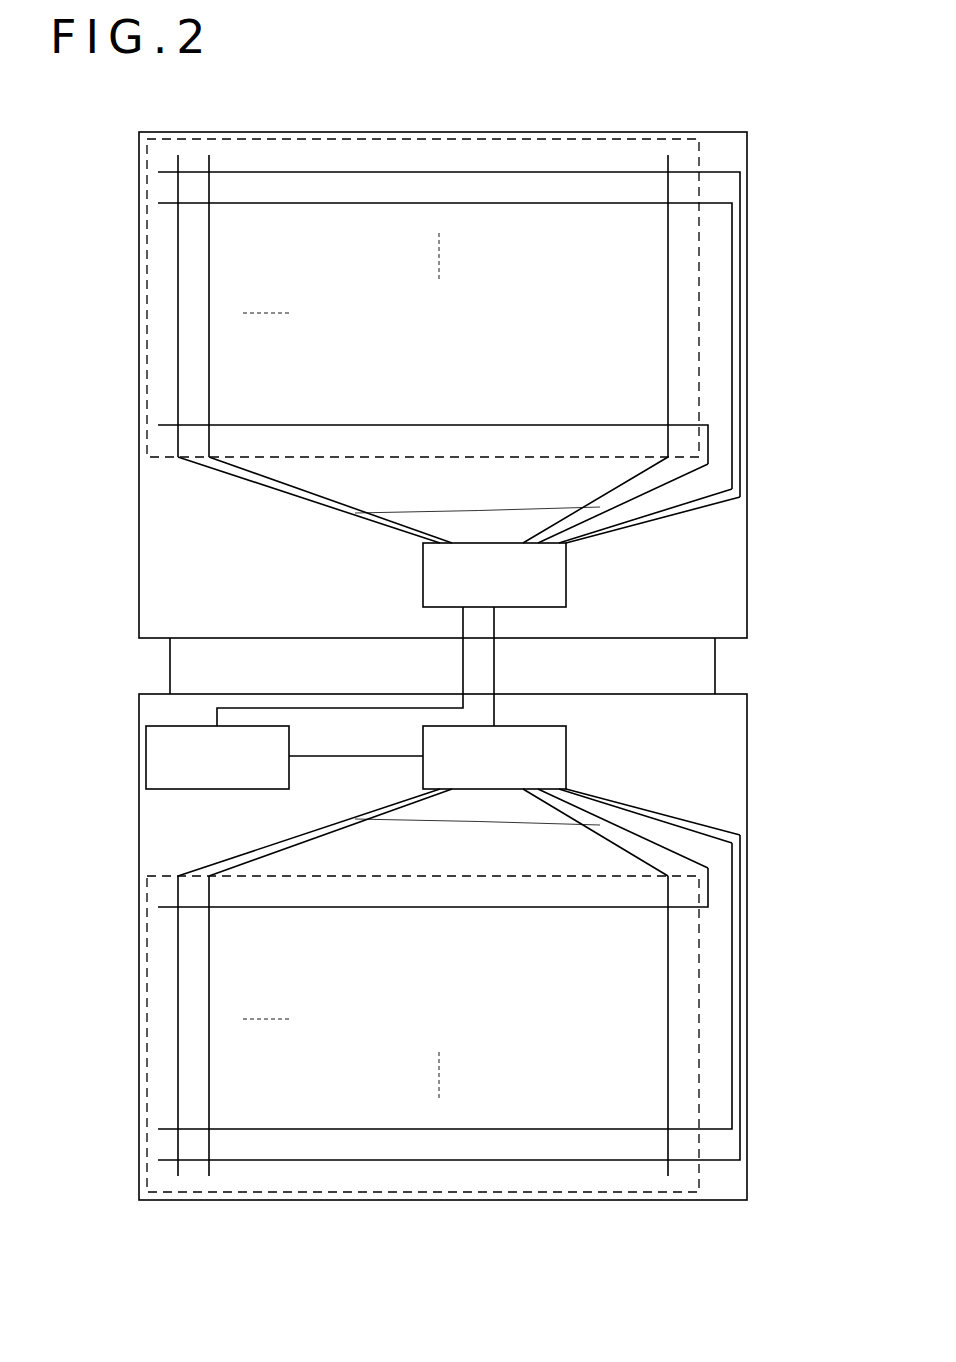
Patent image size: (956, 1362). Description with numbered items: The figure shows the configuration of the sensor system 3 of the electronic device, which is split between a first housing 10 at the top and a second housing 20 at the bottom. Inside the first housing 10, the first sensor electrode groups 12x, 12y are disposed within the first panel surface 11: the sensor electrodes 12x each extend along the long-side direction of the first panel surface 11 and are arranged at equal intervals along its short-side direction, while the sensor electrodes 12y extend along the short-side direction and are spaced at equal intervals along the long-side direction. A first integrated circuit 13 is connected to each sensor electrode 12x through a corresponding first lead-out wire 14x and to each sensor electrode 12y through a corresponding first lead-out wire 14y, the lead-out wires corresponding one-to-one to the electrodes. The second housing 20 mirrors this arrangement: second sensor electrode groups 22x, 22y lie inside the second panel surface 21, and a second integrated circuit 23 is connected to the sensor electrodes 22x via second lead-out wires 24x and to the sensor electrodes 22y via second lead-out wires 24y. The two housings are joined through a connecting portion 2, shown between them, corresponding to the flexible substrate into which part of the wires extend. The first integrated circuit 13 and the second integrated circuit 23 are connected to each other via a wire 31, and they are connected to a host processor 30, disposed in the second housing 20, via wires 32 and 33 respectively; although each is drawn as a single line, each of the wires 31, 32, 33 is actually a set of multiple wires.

The connection portion 2 is at (717, 660).
The sensor system 3 is at (721, 97).
The first housing 10 is at (748, 387).
The first panel surface 11 is at (162, 460).
The sensor electrodes 12x is at (541, 423).
The sensor electrodes 12y is at (667, 316).
The first integrated circuit 13 is at (481, 589).
The first lead-out wires 14x is at (667, 472).
The first lead-out wires 14y is at (328, 504).
The second housing 20 is at (748, 946).
The second panel surface 21 is at (162, 873).
The sensor electrodes 22x is at (541, 909).
The sensor electrodes 22y is at (667, 1018).
The second integrated circuit 23 is at (481, 771).
The second lead-out wires 24x is at (667, 860).
The second lead-out wires 24y is at (328, 824).
The host processor 30 is at (204, 771).
The wire 31 is at (497, 662).
The wire 32 is at (460, 662).
The wire 33 is at (375, 758).